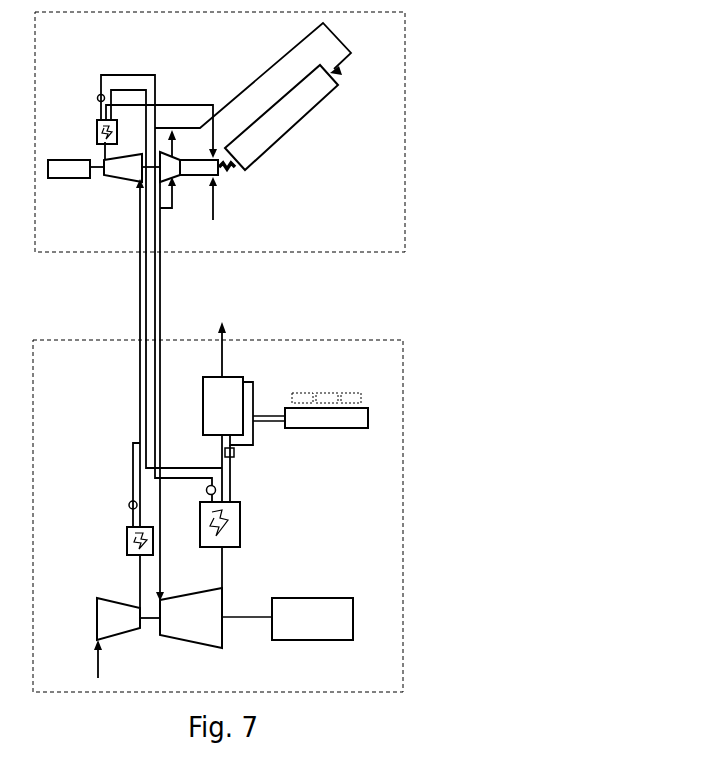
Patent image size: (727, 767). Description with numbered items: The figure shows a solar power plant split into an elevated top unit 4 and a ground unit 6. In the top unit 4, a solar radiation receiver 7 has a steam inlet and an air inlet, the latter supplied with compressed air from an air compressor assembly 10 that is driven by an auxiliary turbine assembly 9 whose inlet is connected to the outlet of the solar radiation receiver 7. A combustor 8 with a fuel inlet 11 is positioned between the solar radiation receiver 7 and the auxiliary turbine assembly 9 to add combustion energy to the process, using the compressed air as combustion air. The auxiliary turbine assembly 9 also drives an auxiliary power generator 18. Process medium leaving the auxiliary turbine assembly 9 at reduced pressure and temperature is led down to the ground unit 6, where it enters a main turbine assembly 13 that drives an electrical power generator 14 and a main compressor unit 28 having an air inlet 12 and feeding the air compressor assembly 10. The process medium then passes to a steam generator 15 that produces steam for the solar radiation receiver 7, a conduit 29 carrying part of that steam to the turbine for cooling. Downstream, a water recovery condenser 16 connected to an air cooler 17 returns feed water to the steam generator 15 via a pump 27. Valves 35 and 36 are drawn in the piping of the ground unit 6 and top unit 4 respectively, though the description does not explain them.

The top unit 4 is at (408, 142).
The ground unit 6 is at (410, 510).
The solar radiation receiver 7 is at (300, 107).
The combustor 8 is at (203, 178).
The auxiliary turbine assembly 9 is at (170, 171).
The air compressor assembly 10 is at (118, 173).
The fuel inlet 11 is at (217, 190).
The air inlet 12 is at (92, 661).
The main turbine assembly 13 is at (190, 630).
The electrical power generator 14 is at (333, 605).
The steam generator 15 is at (243, 522).
The water recovery condenser 16 is at (232, 393).
The air cooler 17 is at (323, 420).
The auxiliary power generator 18 is at (72, 176).
The pump 27 is at (237, 453).
The main compressor unit 28 is at (113, 627).
The conduit 29 is at (176, 212).
The control valve 35 is at (126, 540).
The control valve 36 is at (93, 128).